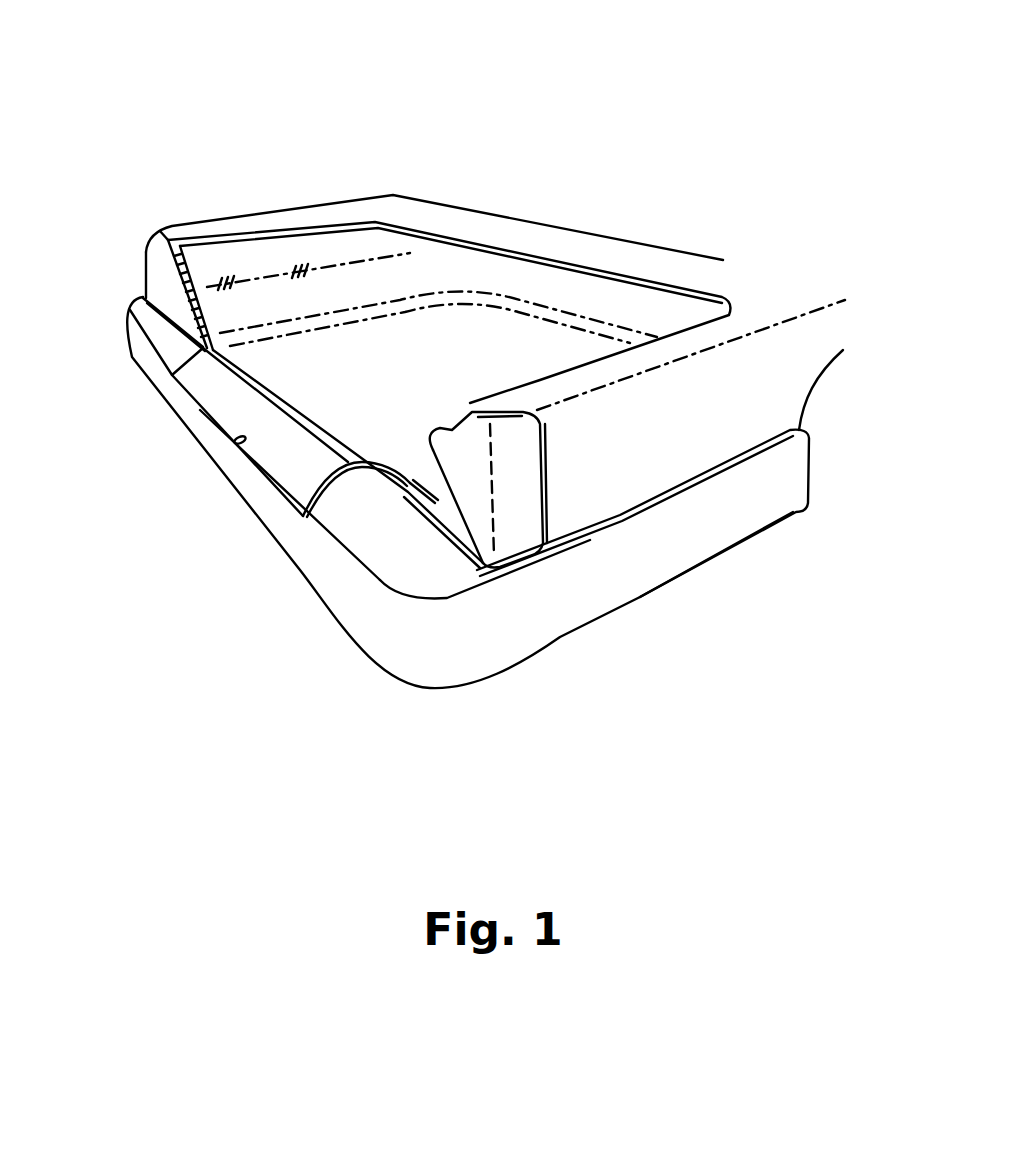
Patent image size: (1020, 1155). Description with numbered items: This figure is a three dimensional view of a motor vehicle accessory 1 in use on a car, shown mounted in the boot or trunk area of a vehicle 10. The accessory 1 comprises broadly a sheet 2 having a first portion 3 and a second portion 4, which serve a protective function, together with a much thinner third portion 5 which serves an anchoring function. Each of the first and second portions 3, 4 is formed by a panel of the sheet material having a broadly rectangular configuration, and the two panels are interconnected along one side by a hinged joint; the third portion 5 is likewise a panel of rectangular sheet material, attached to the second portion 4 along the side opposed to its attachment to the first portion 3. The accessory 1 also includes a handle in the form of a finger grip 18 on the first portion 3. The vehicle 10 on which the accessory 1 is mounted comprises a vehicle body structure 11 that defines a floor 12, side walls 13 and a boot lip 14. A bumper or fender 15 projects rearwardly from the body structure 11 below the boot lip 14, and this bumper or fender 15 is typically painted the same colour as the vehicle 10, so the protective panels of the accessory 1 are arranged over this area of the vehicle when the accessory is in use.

The motor vehicle accessory 1 is at (283, 365).
The sheet 2 is at (208, 382).
The first portion 3 is at (220, 408).
The second portion 4 is at (295, 398).
The third portion 5 is at (483, 563).
The vehicle 10 is at (521, 223).
The vehicle body structure 11 is at (588, 268).
The floor 12 is at (408, 345).
The side walls 13 is at (433, 447).
The boot lip 14 is at (146, 298).
The bumper or fender 15 is at (427, 573).
The finger grip 18 is at (233, 444).